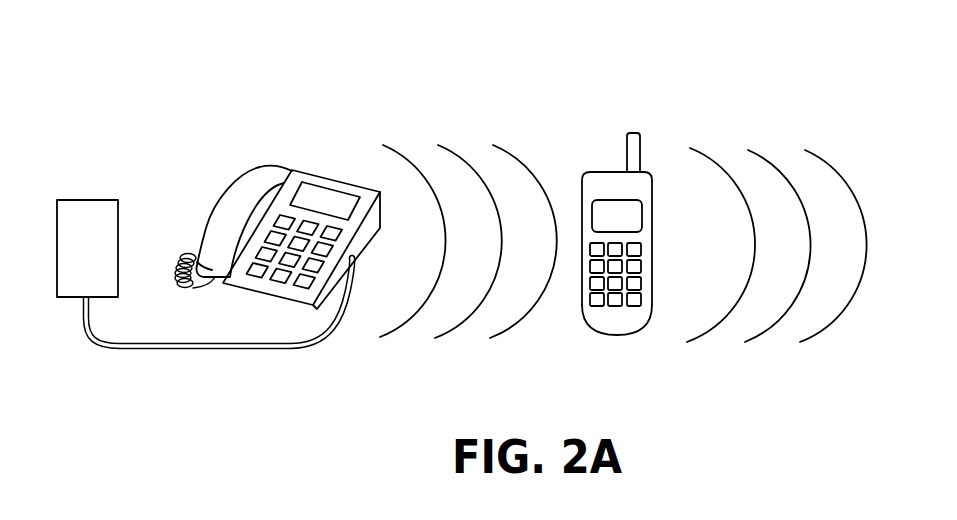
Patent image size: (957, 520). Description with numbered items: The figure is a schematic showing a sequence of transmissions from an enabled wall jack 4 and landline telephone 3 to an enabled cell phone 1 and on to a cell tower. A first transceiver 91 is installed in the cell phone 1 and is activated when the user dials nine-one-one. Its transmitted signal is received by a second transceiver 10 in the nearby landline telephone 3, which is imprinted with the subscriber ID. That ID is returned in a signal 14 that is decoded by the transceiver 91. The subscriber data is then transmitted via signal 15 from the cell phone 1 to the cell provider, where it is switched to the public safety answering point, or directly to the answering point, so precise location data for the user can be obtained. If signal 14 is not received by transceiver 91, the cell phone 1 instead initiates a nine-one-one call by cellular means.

The cell phone 1 is at (617, 170).
The landline telephone 3 is at (308, 173).
The wall jack 4 is at (97, 197).
The second transceiver 10 is at (367, 188).
The signal 14 is at (437, 195).
The signal 15 is at (797, 165).
The first transceiver 91 is at (618, 320).